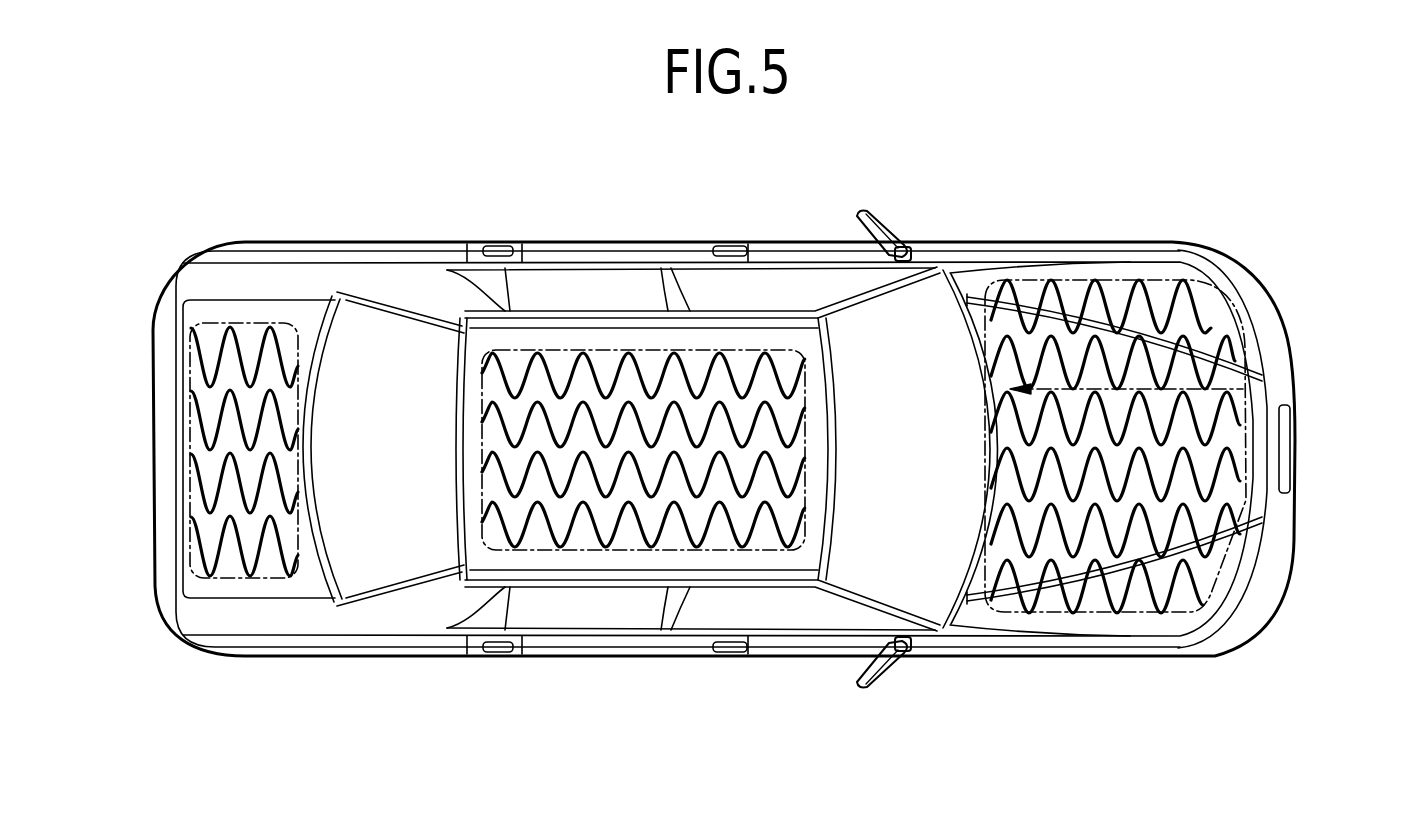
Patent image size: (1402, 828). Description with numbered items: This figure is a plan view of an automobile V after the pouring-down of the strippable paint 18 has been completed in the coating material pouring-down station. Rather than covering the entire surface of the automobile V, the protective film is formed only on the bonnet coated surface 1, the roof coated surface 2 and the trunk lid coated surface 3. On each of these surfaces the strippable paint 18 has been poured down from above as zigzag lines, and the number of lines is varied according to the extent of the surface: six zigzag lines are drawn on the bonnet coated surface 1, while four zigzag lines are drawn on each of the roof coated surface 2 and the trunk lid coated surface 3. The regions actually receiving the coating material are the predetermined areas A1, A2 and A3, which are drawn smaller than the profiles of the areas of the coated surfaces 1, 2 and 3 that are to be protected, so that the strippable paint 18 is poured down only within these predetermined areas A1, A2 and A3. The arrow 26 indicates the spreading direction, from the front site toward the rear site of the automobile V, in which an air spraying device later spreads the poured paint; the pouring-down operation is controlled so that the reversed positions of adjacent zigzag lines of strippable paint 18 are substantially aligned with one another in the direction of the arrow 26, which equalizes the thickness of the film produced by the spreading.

The automobile V is at (769, 222).
The bonnet coated surface 1 is at (1237, 375).
The roof coated surface 2 is at (780, 550).
The trunk lid coated surface 3 is at (236, 308).
The strippable paint 18 is at (283, 420).
The arrow 26 is at (1192, 306).
The predetermined area A1 is at (1113, 272).
The predetermined area A2 is at (605, 350).
The predetermined area A3 is at (281, 322).